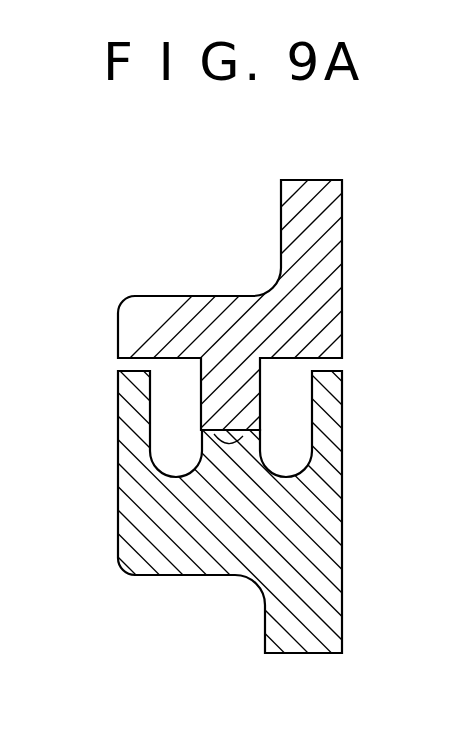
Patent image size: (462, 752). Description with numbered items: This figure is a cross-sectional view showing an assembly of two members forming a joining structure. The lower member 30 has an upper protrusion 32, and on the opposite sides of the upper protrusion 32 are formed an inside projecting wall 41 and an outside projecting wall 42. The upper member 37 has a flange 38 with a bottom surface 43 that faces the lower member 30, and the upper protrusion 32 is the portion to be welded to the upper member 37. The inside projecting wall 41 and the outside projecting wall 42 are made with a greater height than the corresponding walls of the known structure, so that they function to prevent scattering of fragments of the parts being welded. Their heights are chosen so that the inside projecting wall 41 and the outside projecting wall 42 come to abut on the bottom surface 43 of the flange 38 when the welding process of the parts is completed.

The lower member 30 is at (292, 622).
The upper protrusion 32 is at (202, 430).
The upper member 37 is at (302, 215).
The flange 38 is at (160, 327).
The inside projecting wall 41 is at (328, 458).
The outside projecting wall 42 is at (128, 452).
The bottom surface 43 is at (290, 358).